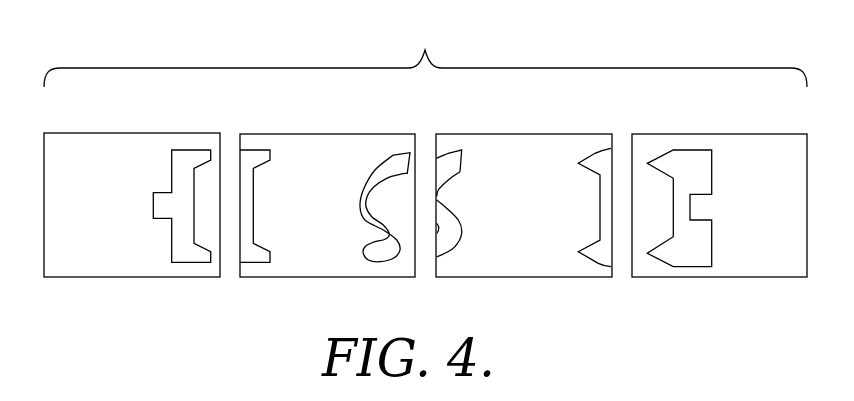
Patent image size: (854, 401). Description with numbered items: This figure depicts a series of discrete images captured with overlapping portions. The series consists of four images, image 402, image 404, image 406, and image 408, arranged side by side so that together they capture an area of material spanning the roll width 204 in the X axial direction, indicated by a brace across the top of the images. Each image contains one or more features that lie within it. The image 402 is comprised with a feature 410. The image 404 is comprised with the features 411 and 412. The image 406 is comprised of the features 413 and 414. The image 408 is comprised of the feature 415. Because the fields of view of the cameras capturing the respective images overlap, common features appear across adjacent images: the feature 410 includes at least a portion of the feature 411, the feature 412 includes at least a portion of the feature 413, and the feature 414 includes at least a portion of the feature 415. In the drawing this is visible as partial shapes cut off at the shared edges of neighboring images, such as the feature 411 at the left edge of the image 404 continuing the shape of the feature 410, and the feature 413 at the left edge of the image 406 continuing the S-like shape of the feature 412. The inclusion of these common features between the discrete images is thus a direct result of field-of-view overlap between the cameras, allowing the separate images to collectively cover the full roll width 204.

The roll width 204 is at (468, 33).
The image 402 is at (118, 133).
The image 404 is at (330, 134).
The image 406 is at (527, 134).
The image 408 is at (718, 134).
The feature 410 is at (183, 243).
The feature 411 is at (250, 254).
The feature 412 is at (380, 252).
The feature 413 is at (447, 243).
The feature 414 is at (598, 257).
The feature 415 is at (692, 252).